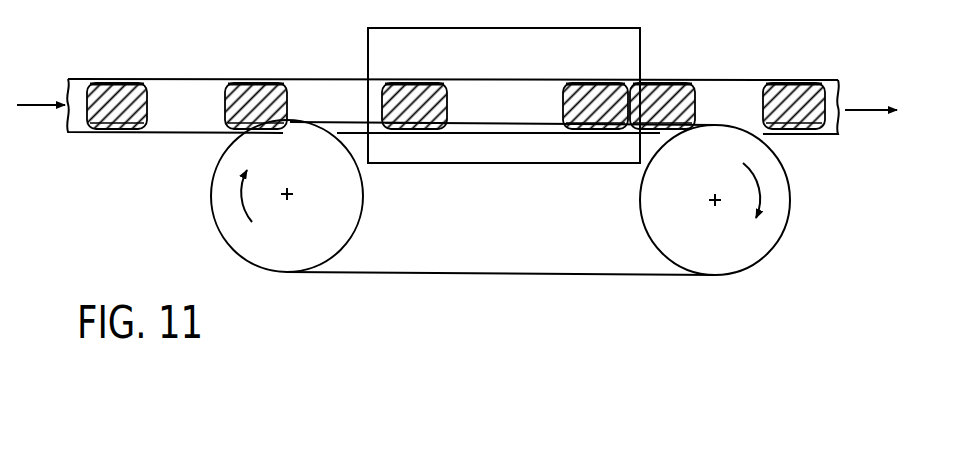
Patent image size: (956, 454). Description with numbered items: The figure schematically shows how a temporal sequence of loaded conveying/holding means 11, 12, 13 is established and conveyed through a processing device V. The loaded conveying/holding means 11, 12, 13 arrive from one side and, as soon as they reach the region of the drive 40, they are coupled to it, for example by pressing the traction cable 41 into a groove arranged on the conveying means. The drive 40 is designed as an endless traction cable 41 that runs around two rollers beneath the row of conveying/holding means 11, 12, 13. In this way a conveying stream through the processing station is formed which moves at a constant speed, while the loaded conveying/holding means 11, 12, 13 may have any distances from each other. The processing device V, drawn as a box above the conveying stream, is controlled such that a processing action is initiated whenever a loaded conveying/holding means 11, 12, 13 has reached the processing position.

The conveying/holding means 11 is at (123, 88).
The conveying/holding means 12 is at (456, 70).
The conveying/holding means 13 is at (786, 100).
The drive 40 is at (206, 209).
The traction cable 41 is at (467, 122).
The processing device V is at (531, 143).